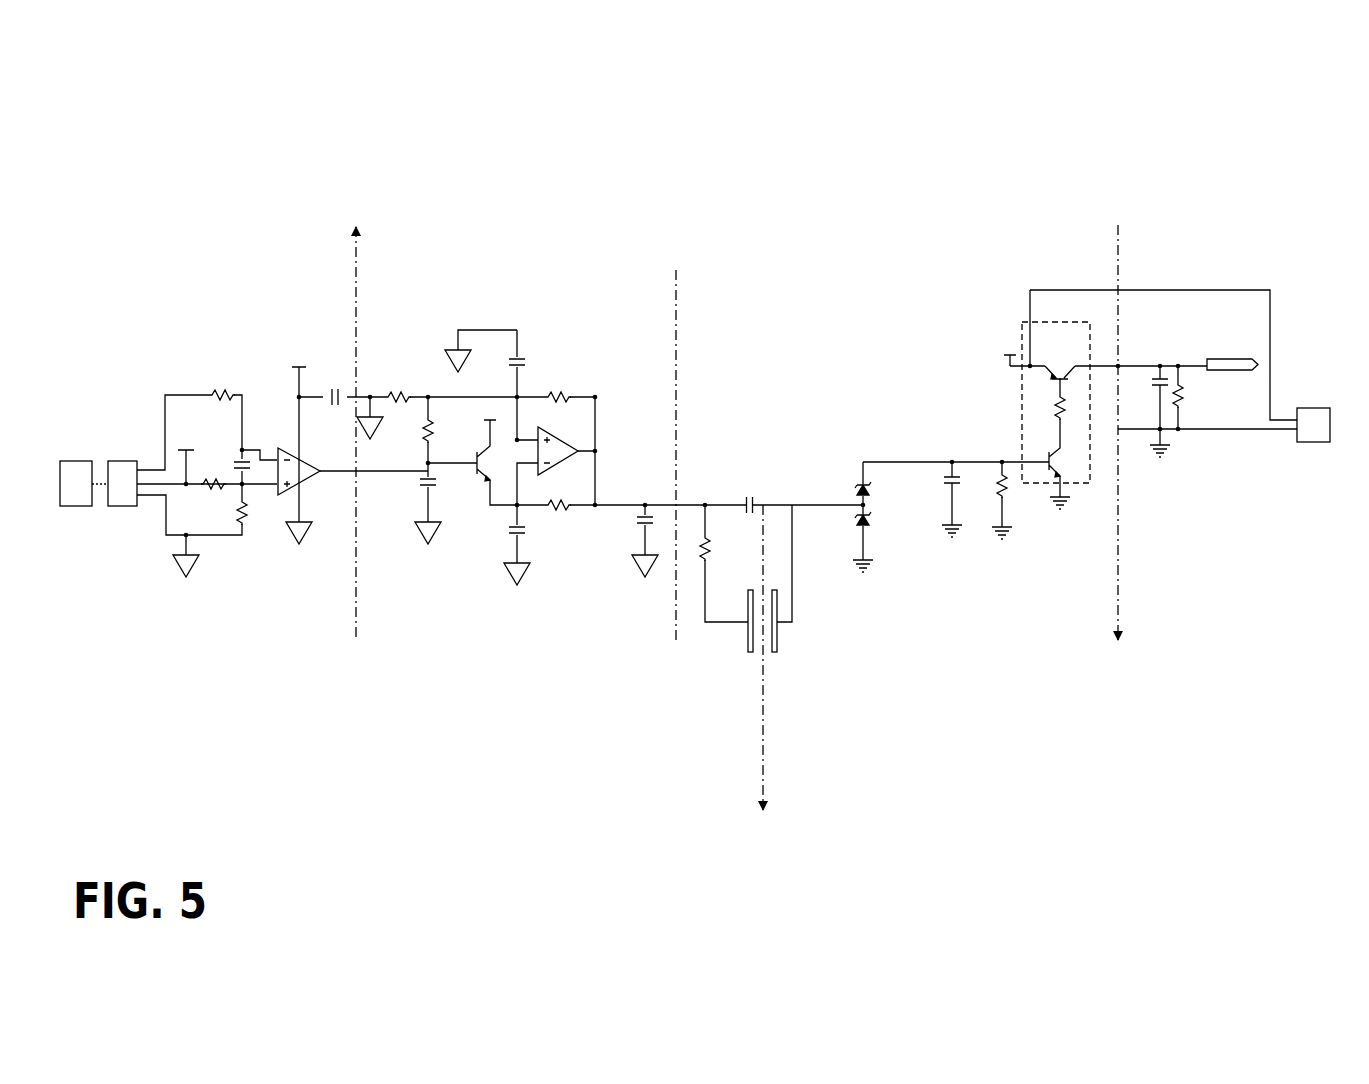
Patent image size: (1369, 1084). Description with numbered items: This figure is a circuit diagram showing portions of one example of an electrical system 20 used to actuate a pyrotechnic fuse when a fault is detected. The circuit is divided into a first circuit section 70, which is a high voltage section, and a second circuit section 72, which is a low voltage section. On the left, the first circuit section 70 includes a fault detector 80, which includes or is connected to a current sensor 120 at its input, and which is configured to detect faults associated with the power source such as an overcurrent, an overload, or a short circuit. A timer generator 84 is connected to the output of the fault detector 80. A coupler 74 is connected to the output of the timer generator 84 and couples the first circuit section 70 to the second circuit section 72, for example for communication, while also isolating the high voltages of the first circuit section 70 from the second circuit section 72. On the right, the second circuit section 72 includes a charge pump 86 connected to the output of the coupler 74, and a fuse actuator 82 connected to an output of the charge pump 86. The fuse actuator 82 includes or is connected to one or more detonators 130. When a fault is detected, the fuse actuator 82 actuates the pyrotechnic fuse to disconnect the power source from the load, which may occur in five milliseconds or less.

The electrical system 20 is at (285, 150).
The current sensor 120 is at (72, 461).
The fault detector 80 is at (226, 347).
The timer generator 84 is at (497, 295).
The charge pump 86 is at (704, 247).
The coupler 74 is at (721, 646).
The fuse actuator 82 is at (1188, 250).
The detonator 130 is at (1230, 358).
The first circuit section 70 is at (420, 718).
The second circuit section 72 is at (978, 730).